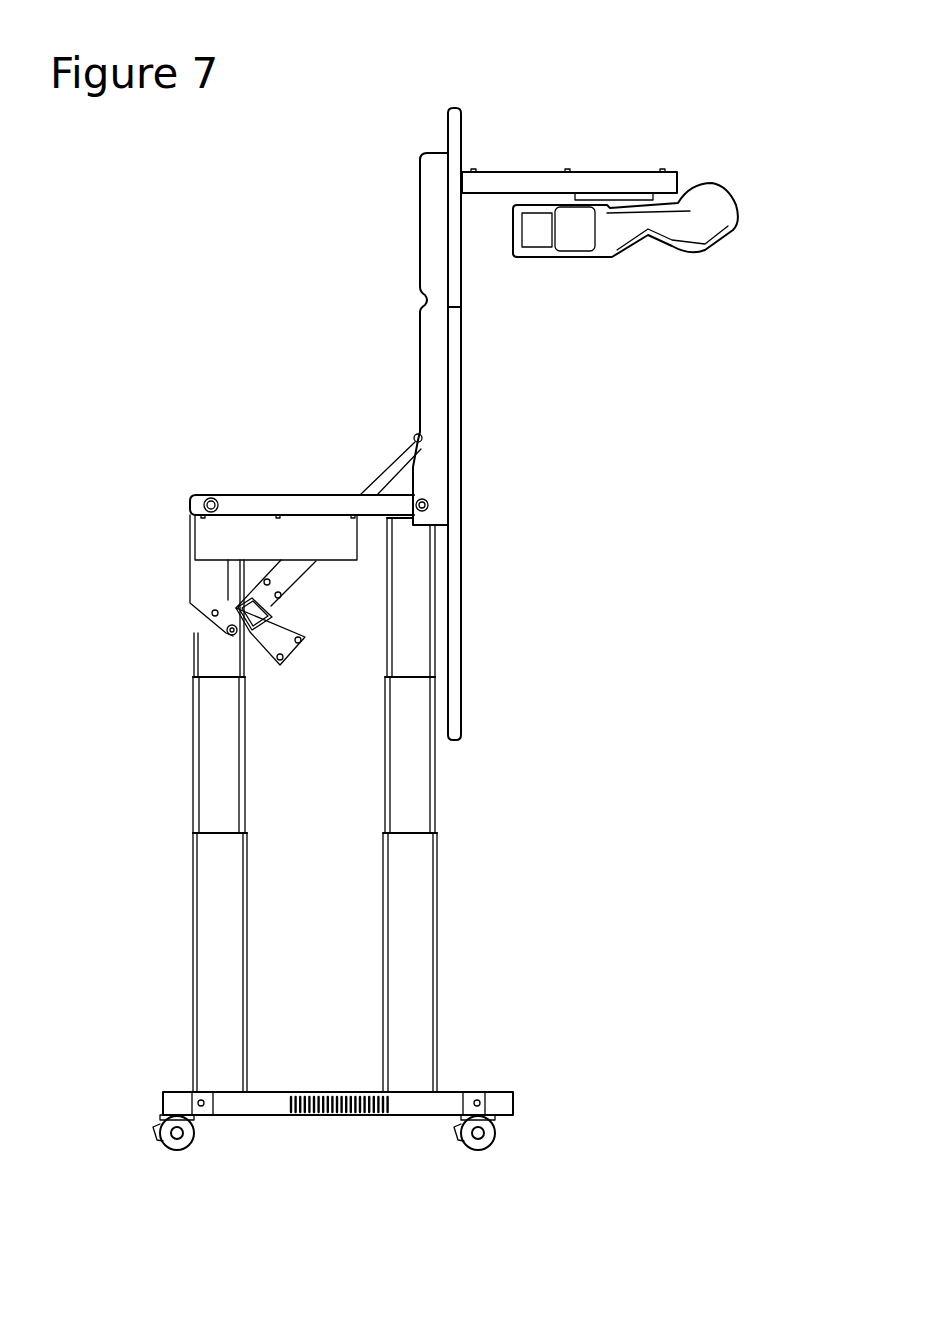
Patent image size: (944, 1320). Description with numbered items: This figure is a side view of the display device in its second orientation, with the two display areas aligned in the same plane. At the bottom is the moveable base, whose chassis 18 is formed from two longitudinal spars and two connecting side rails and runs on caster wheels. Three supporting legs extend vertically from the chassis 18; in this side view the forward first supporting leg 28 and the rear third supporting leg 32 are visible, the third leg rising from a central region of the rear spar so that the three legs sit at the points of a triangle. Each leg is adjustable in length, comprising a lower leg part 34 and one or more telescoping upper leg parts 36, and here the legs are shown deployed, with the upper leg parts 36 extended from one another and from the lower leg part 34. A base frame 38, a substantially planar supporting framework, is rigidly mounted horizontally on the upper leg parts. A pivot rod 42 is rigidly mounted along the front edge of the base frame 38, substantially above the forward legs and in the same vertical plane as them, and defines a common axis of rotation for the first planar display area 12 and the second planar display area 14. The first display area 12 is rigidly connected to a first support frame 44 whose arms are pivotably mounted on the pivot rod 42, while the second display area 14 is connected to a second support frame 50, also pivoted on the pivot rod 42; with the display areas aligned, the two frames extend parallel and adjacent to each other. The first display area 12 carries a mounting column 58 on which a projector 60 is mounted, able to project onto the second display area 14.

The first planar display area 12 is at (466, 131).
The second planar display area 14 is at (463, 552).
The chassis 18 is at (412, 1105).
The first supporting leg 28 is at (350, 805).
The third supporting leg 32 is at (314, 847).
The lower leg part 34 is at (215, 883).
The telescoping upper leg parts 36 is at (215, 648).
The base frame 38 is at (273, 500).
The pivot rod 42 is at (432, 500).
The first support frame 44 is at (430, 212).
The second support frame 50 is at (430, 423).
The mounting column 58 is at (610, 180).
The projector 60 is at (735, 226).